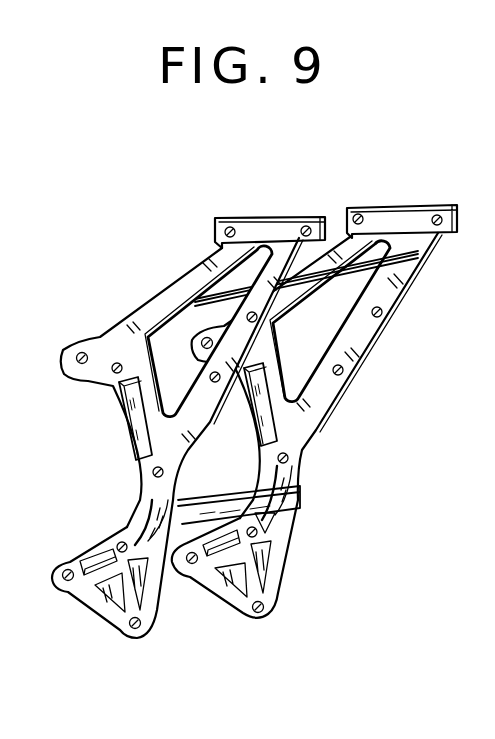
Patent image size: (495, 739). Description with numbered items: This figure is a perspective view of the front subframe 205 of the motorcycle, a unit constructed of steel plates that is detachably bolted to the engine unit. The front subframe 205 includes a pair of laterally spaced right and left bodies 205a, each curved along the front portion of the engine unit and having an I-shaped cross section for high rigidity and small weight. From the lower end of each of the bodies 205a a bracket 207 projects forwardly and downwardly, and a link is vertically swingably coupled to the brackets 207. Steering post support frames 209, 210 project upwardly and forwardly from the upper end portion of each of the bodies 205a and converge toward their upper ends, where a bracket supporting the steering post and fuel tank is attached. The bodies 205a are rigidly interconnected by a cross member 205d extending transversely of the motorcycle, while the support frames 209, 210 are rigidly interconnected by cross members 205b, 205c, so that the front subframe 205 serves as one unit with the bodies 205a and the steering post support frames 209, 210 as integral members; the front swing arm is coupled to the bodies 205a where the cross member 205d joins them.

The front subframe 205 is at (190, 229).
The bodies 205a is at (145, 427).
The cross member 205b is at (185, 307).
The cross member 205c is at (313, 275).
The cross member 205d is at (183, 520).
The bracket 207 is at (117, 597).
The steering post support frame 209 is at (150, 318).
The steering post support frame 210 is at (393, 305).